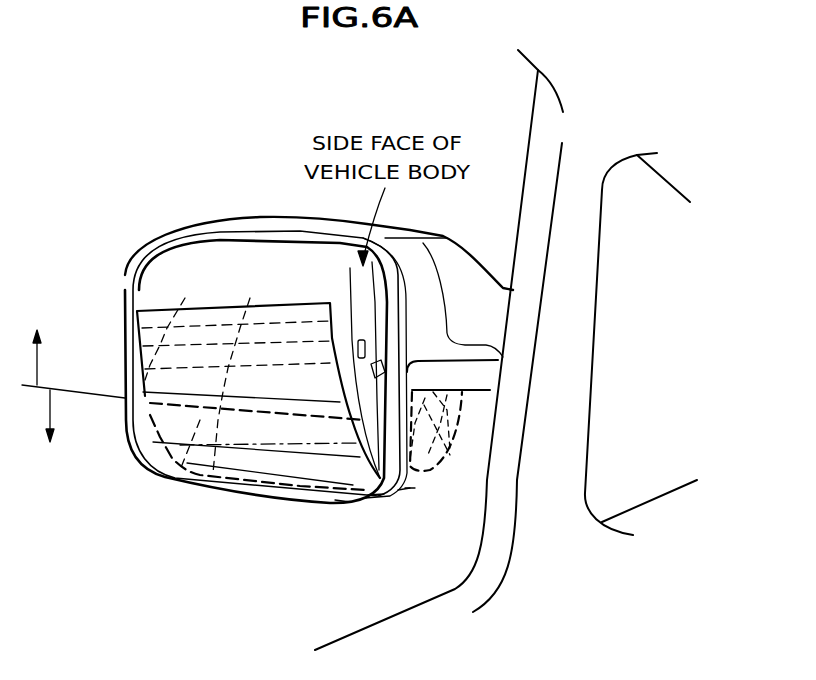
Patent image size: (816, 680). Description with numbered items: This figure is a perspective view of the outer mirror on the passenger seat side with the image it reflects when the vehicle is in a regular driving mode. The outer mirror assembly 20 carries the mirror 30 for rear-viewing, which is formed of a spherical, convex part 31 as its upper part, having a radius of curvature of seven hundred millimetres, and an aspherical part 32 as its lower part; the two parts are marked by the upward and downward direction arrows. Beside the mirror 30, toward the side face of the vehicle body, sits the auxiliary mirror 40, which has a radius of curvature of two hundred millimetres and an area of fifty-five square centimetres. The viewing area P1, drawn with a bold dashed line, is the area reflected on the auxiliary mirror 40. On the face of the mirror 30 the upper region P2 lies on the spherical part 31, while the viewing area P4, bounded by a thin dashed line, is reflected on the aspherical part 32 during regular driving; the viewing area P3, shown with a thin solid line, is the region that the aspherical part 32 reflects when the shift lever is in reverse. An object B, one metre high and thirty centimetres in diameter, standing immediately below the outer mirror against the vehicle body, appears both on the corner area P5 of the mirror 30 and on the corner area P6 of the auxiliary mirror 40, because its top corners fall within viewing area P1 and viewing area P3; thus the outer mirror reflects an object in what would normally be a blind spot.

The door mirror housing 20 is at (272, 217).
The mirror 30 is at (158, 262).
The spherical part 31 is at (35, 344).
The aspherical part 32 is at (50, 433).
The auxiliary mirror 40 is at (462, 412).
The viewing area P1 is at (458, 442).
The upper mirror region P2 is at (207, 307).
The viewing area P3 is at (263, 473).
The viewing area P4 is at (170, 478).
The corner area P5 is at (377, 493).
The corner area P6 is at (404, 490).
The object B is at (339, 500).